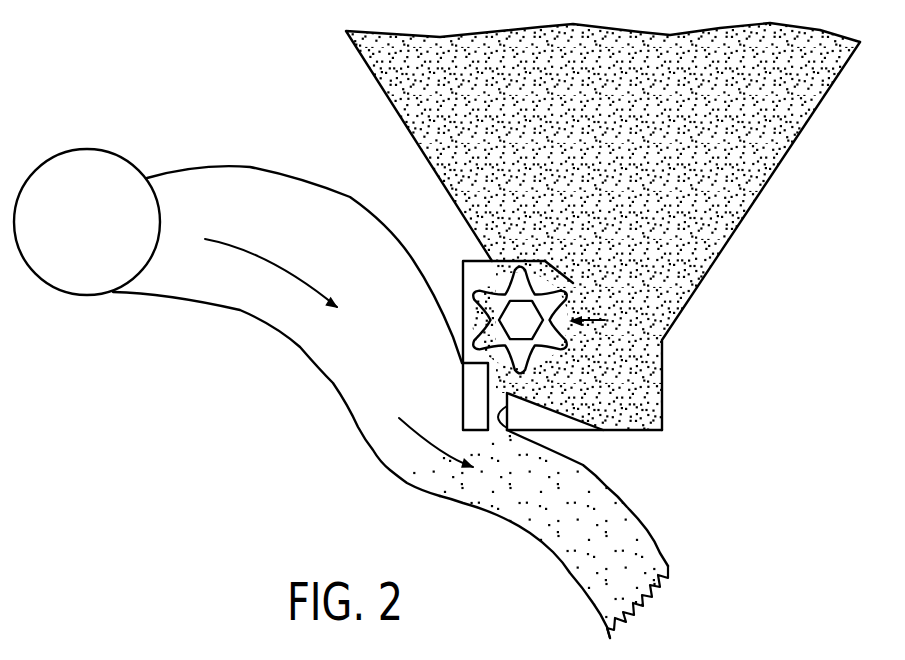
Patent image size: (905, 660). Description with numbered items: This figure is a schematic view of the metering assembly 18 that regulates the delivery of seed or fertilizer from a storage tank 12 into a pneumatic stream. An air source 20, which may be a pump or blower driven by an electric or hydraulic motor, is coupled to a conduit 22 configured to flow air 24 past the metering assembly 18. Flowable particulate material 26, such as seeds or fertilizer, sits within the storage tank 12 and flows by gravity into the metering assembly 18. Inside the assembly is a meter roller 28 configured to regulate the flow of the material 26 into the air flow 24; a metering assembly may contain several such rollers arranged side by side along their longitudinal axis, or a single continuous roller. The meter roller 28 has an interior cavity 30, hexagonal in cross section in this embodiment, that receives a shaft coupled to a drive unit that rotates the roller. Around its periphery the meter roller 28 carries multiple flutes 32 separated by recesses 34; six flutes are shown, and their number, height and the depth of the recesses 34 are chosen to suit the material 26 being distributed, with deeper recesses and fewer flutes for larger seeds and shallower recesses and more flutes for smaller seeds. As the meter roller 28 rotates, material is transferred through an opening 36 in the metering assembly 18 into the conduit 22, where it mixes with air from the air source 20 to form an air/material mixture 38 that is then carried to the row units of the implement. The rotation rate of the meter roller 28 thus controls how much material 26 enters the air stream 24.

The storage tank 12 is at (372, 71).
The metering assembly 18 is at (453, 258).
The air source 20 is at (87, 149).
The conduit 22 is at (318, 370).
The air flow 24 is at (272, 260).
The flowable particulate material 26 is at (773, 140).
The meter roller 28 is at (605, 320).
The interior cavity 30 is at (506, 342).
The flutes 32 is at (498, 293).
The recesses 34 is at (533, 285).
The opening 36 is at (508, 426).
The air/material mixture 38 is at (564, 541).